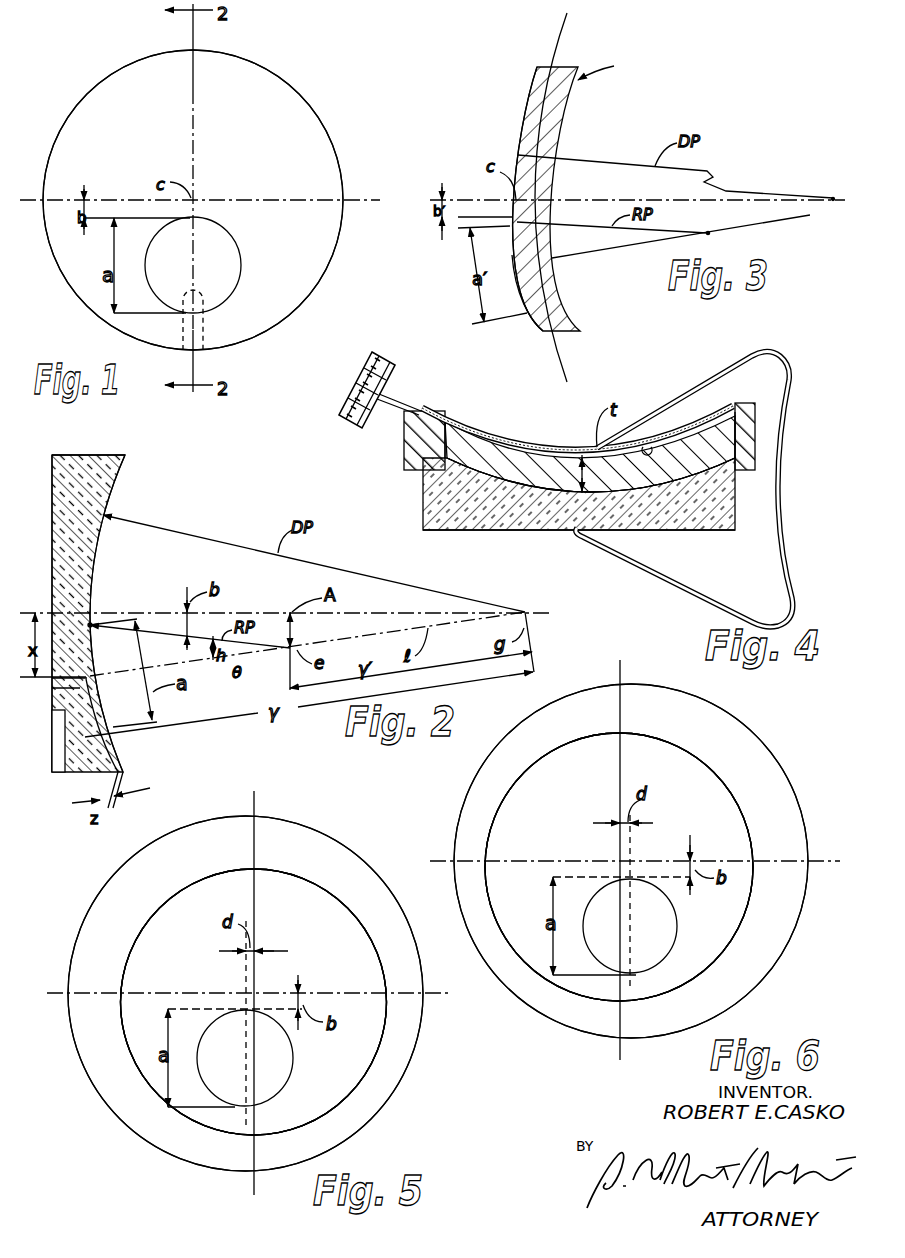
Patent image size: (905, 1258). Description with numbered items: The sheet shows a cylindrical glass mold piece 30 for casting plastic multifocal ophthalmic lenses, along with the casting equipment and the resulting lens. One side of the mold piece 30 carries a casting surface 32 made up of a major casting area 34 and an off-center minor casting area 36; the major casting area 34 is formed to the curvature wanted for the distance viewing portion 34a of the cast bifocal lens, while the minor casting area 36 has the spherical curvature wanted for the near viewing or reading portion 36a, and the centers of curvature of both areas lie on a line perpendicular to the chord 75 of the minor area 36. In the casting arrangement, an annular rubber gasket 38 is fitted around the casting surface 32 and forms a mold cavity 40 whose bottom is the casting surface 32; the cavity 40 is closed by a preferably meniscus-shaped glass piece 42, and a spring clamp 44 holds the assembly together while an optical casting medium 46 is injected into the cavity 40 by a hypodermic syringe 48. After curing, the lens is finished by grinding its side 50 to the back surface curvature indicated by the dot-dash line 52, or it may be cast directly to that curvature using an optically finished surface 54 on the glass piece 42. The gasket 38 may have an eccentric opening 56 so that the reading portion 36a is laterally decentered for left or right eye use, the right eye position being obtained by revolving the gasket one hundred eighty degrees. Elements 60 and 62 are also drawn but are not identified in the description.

In FIG. 1, the mold piece 30 is at (206, 191).
In FIG. 4, the mold piece 30 is at (531, 488).
In FIG. 2, the mold piece 30 is at (113, 616).
In FIG. 1, the casting surface 32 is at (282, 106).
In FIG. 4, the casting surface 32 is at (537, 484).
In FIG. 2, the casting surface 32 is at (97, 577).
In FIG. 5, the casting surface 32 is at (350, 1073).
In FIG. 6, the casting surface 32 is at (722, 920).
In FIG. 1, the major casting area 34 is at (311, 130).
In FIG. 4, the major casting area 34 is at (508, 486).
In FIG. 2, the major casting area 34 is at (100, 541).
In FIG. 5, the major casting area 34 is at (363, 977).
In FIG. 6, the major casting area 34 is at (730, 838).
In FIG. 1, the minor casting area 36 is at (224, 300).
In FIG. 4, the minor casting area 36 is at (645, 497).
In FIG. 2, the minor casting area 36 is at (73, 690).
In FIG. 5, the minor casting area 36 is at (270, 1088).
In FIG. 6, the minor casting area 36 is at (650, 962).
In FIG. 4, the annular gasket 38 is at (401, 437).
In FIG. 5, the annular gasket 38 is at (275, 823).
In FIG. 6, the annular gasket 38 is at (548, 712).
In FIG. 4, the mold cavity 40 is at (711, 440).
In FIG. 5, the mold cavity 40 is at (328, 909).
In FIG. 6, the mold cavity 40 is at (690, 775).
In FIG. 4, the glass piece 42 is at (545, 450).
In FIG. 4, the spring clamp 44 is at (790, 411).
In FIG. 4, the casting medium 46 is at (490, 449).
In FIG. 4, the hypodermic syringe 48 is at (352, 388).
In FIG. 3, the side of lens 50 is at (556, 200).
In FIG. 3, the back surface curvature 52 is at (558, 36).
In FIG. 4, the optically finished surface 54 is at (647, 447).
In FIG. 5, the eccentric opening 56 is at (298, 882).
In FIG. 6, the eccentric opening 56 is at (636, 735).
In FIG. 2, the blocked surface 60 is at (52, 530).
In FIG. 1, the locating slot 62 is at (210, 338).
In FIG. 2, the locating slot 62 is at (60, 750).
In FIG. 2, the chord 75 is at (95, 633).
In FIG. 3, the distance viewing portion 34a is at (528, 98).
In FIG. 3, the reading portion 36a is at (520, 293).